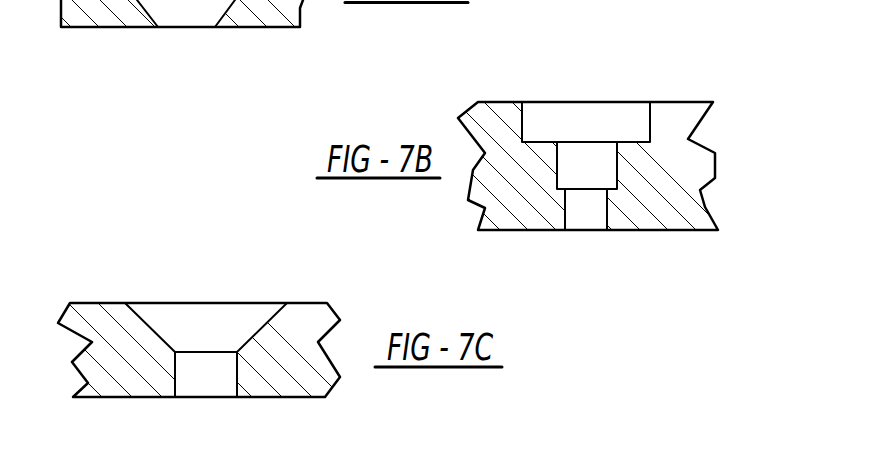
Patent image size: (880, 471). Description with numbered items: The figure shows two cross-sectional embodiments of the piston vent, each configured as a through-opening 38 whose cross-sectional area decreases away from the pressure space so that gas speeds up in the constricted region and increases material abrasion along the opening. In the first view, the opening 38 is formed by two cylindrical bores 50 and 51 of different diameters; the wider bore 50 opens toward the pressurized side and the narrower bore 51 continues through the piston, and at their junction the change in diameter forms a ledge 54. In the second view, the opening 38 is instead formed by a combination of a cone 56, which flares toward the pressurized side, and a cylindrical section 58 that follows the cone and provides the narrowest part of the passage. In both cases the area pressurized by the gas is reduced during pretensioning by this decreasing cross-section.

In FIG. 7B, the through-opening 38 is at (652, 142).
In FIG. 7C, the through-opening 38 is at (265, 320).
In FIG. 7B, the cylindrical bore 50 is at (525, 120).
In FIG. 7B, the cylindrical bore 51 is at (558, 165).
In FIG. 7B, the ledge 54 is at (633, 142).
In FIG. 7C, the cone 56 is at (158, 330).
In FIG. 7C, the cylindrical section 58 is at (177, 370).